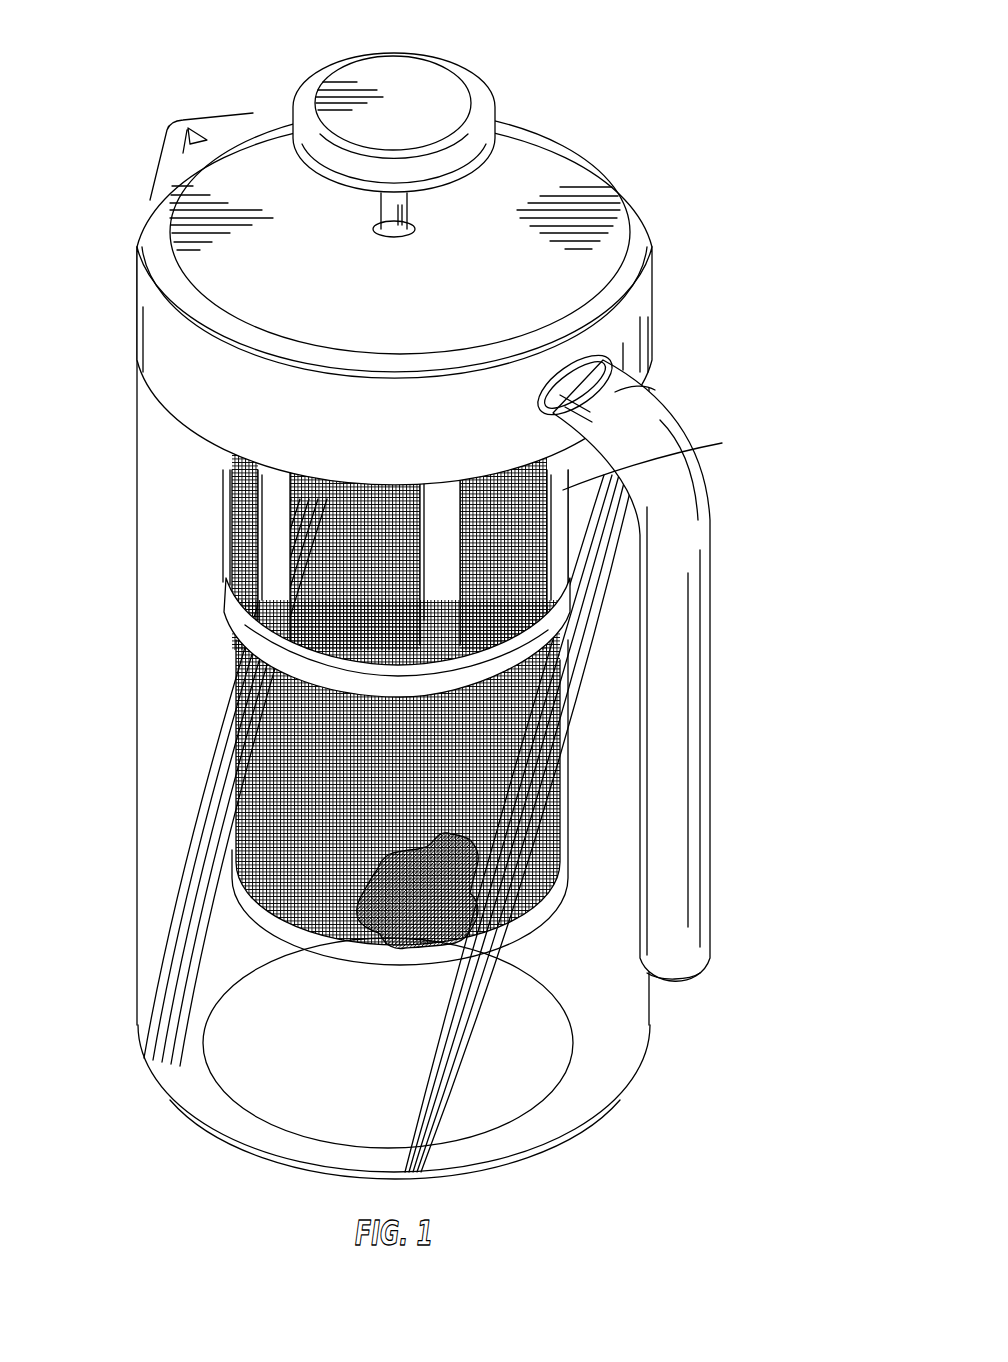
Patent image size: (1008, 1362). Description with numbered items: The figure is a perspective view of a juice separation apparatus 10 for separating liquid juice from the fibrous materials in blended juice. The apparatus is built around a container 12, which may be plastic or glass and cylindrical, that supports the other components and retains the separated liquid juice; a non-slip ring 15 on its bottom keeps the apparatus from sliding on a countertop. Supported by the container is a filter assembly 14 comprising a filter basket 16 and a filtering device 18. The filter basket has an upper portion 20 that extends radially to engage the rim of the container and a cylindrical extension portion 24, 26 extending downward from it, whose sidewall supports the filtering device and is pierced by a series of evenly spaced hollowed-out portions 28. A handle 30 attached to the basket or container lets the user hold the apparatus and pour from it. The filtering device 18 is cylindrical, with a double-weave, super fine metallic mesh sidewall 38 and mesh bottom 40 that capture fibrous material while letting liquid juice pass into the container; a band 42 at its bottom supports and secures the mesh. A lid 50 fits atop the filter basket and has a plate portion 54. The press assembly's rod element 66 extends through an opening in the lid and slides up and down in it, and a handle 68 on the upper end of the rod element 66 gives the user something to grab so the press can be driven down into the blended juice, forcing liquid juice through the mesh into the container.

The juice separation apparatus 10 is at (764, 238).
The container 12 is at (136, 940).
The filter assembly 14 is at (228, 632).
The non-slip ring 15 is at (578, 1078).
The filter basket 16 is at (645, 316).
The filtering device 18 is at (557, 799).
The upper portion 20 is at (150, 337).
The cylindrical extension portion 24 is at (697, 445).
The cylindrical extension portion 26 is at (276, 540).
The hollowed-out portions 28 is at (293, 585).
The handle 30 is at (700, 486).
The mesh sidewall 38 is at (394, 800).
The mesh bottom 40 is at (434, 908).
The band 42 is at (548, 905).
The lid 50 is at (585, 170).
The plate portion 54 is at (314, 301).
The rod element 66 is at (402, 208).
The handle 68 is at (432, 82).